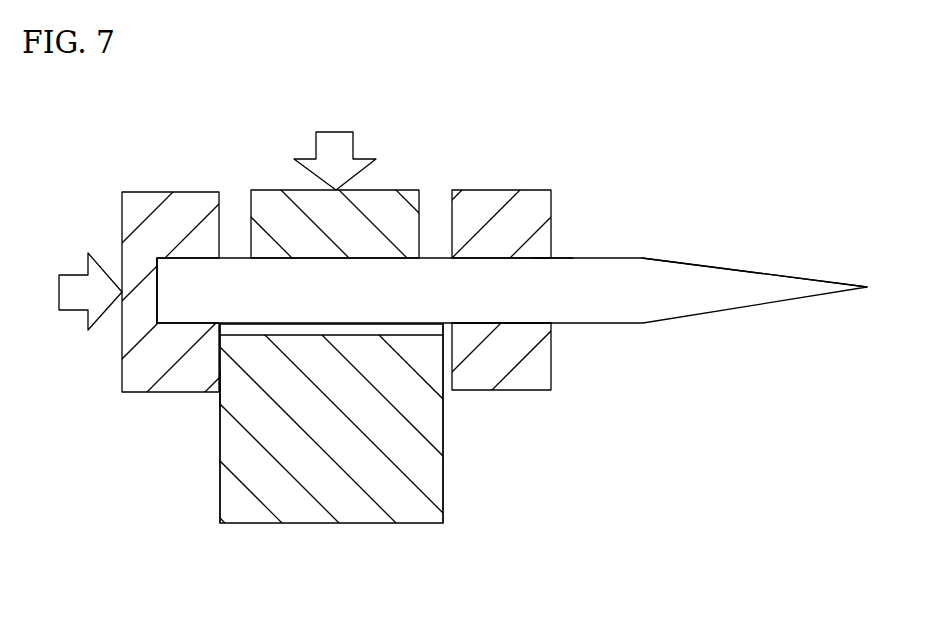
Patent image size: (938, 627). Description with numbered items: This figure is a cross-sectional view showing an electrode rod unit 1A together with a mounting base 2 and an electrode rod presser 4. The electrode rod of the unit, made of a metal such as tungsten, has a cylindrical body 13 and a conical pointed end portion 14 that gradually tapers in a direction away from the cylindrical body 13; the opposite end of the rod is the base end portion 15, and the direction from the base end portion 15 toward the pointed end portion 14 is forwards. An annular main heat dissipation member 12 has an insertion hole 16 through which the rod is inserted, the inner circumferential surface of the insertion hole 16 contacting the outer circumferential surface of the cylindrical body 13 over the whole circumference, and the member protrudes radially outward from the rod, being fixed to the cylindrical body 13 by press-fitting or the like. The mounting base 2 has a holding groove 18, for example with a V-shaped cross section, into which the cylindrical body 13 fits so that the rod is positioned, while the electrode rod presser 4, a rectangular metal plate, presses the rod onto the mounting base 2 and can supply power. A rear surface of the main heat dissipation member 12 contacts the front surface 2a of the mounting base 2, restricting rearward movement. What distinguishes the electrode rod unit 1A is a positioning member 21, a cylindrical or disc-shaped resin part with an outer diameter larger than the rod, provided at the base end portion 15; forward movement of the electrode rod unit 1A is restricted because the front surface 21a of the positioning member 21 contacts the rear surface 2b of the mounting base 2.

The electrode rod unit 1A is at (640, 175).
The mounting base 2 is at (220, 495).
The front surface of the mounting base 2a is at (447, 480).
The rear surface of the mounting base 2b is at (219, 438).
The electrode rod presser 4 is at (273, 190).
The main heat dissipation member 12 is at (505, 390).
The cylindrical body 13 is at (527, 303).
The pointed end portion 14 is at (736, 295).
The base end portion 15 is at (157, 313).
The insertion hole 16 is at (532, 258).
The holding groove 18 is at (338, 335).
The positioning member 21 is at (165, 192).
The front surface of the positioning member 21a is at (221, 372).